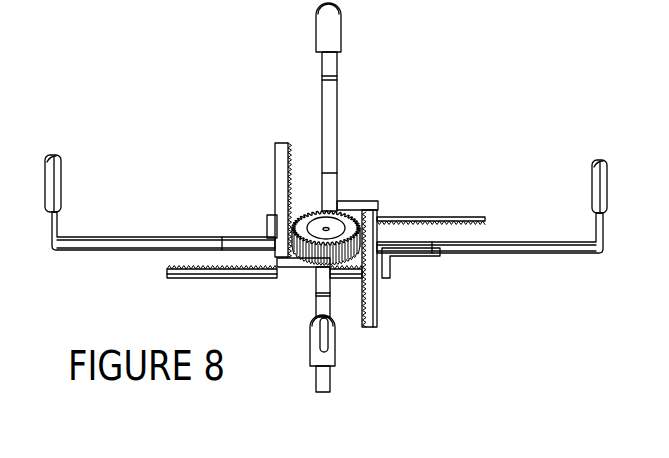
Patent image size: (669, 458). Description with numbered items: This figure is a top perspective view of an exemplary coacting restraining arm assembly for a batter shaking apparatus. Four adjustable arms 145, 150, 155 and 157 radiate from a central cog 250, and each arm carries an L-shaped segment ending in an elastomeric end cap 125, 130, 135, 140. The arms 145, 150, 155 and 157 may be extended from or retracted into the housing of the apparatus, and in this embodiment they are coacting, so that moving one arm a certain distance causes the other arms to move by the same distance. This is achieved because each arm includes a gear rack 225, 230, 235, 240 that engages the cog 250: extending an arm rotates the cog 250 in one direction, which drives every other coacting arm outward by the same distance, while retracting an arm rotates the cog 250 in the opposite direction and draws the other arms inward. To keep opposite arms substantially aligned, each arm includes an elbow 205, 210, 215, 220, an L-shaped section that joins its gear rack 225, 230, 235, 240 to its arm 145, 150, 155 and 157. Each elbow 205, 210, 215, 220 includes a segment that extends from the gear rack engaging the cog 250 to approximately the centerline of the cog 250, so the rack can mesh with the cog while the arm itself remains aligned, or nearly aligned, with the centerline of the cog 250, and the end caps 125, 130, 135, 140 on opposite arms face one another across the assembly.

The elastomeric end cap 125 is at (323, 350).
The elastomeric end cap 130 is at (54, 187).
The elastomeric end cap 135 is at (600, 162).
The elastomeric end cap 140 is at (333, 17).
The adjustable arm 145 is at (320, 308).
The adjustable arm 150 is at (143, 243).
The adjustable arm 155 is at (507, 243).
The adjustable arm 157 is at (330, 98).
The elbow 205 is at (297, 262).
The elbow 210 is at (268, 223).
The elbow 215 is at (383, 272).
The elbow 220 is at (350, 207).
The gear rack 225 is at (167, 267).
The gear rack 230 is at (291, 143).
The gear rack 235 is at (362, 327).
The gear rack 240 is at (488, 232).
The cog 250 is at (312, 221).